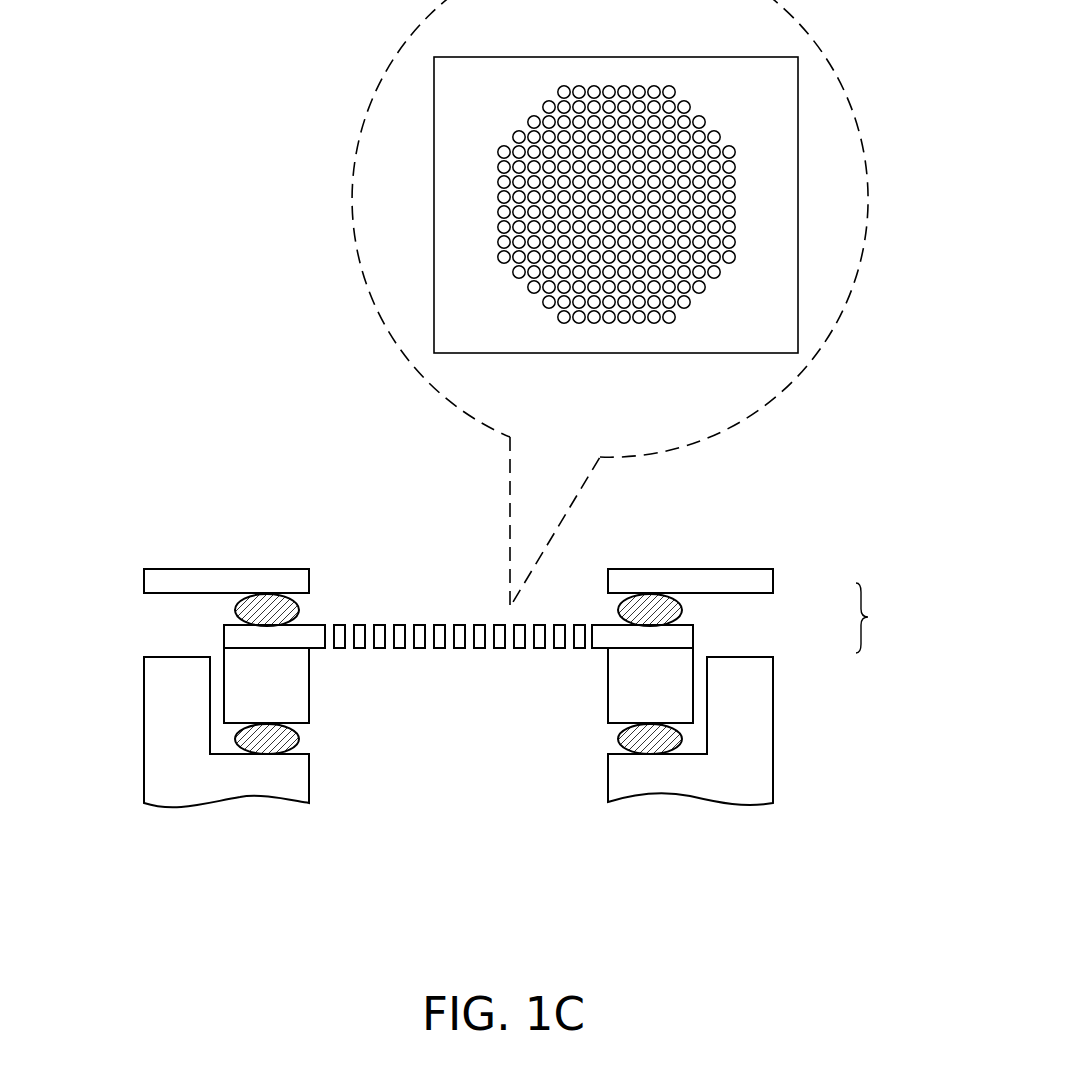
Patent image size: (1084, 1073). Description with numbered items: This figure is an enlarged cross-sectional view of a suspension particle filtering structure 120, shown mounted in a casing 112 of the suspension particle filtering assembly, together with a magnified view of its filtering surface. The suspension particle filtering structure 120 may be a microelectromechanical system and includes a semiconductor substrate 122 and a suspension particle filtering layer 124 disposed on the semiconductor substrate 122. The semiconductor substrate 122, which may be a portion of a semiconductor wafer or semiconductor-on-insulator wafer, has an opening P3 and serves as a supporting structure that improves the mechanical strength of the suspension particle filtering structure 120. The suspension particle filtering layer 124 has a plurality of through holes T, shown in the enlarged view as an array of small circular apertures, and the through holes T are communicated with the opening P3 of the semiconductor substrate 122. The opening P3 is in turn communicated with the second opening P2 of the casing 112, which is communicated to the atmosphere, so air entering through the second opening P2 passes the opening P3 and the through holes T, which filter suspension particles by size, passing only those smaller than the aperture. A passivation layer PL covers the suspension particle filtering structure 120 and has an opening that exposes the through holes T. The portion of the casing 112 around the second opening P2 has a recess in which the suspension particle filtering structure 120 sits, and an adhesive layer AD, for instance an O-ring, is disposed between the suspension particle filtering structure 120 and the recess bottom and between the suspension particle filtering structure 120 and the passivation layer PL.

The through holes T is at (501, 167).
The suspension particle filtering layer 124 is at (462, 237).
The semiconductor substrate 122 is at (675, 663).
The suspension particle filtering structure 120 is at (884, 618).
The passivation layer PL is at (158, 582).
The adhesive layer AD is at (260, 612).
The casing 112 is at (713, 785).
The opening P3 is at (429, 703).
The second opening P2 is at (538, 786).